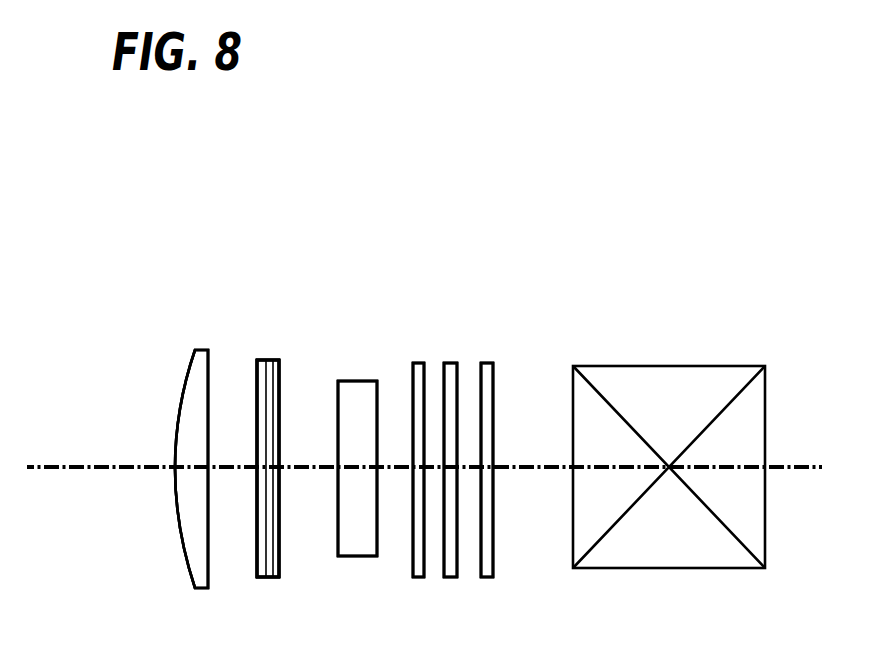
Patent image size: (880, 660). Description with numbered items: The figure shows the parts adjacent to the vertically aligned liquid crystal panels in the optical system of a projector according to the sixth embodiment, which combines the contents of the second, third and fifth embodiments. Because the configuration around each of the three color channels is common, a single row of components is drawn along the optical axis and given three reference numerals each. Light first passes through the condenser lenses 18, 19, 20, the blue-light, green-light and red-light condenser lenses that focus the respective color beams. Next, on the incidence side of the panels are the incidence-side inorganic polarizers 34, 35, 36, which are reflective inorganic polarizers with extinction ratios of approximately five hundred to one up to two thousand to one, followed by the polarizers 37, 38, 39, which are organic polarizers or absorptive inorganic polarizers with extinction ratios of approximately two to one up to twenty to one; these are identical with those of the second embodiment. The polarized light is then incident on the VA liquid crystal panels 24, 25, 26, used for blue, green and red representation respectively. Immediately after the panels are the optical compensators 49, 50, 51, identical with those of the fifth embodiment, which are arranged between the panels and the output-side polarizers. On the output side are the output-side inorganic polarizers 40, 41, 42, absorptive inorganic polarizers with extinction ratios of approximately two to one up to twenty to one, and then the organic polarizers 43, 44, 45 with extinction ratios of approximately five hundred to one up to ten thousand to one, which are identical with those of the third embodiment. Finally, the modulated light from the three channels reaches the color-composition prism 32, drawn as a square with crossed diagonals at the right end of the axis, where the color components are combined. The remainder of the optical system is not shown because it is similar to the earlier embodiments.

The blue-light condenser lens 18 is at (202, 348).
The green-light condenser lens 19 is at (191, 469).
The red-light condenser lens 20 is at (191, 469).
The incidence-side inorganic polarizer 34 is at (257, 360).
The incidence-side inorganic polarizer 35 is at (268, 468).
The incidence-side inorganic polarizer 36 is at (268, 468).
The polarizer 37 is at (277, 360).
The polarizer 38 is at (268, 468).
The polarizer 39 is at (268, 468).
The VA liquid crystal panel 24 is at (363, 381).
The VA liquid crystal panel 25 is at (357, 468).
The VA liquid crystal panel 26 is at (357, 468).
The optical compensator 49 is at (420, 363).
The optical compensator 50 is at (418, 470).
The optical compensator 51 is at (418, 470).
The output-side inorganic polarizer 40 is at (450, 363).
The output-side inorganic polarizer 41 is at (450, 470).
The output-side inorganic polarizer 42 is at (450, 470).
The organic polarizer 43 is at (485, 363).
The organic polarizer 44 is at (487, 470).
The organic polarizer 45 is at (487, 470).
The color-composition prism 32 is at (718, 366).